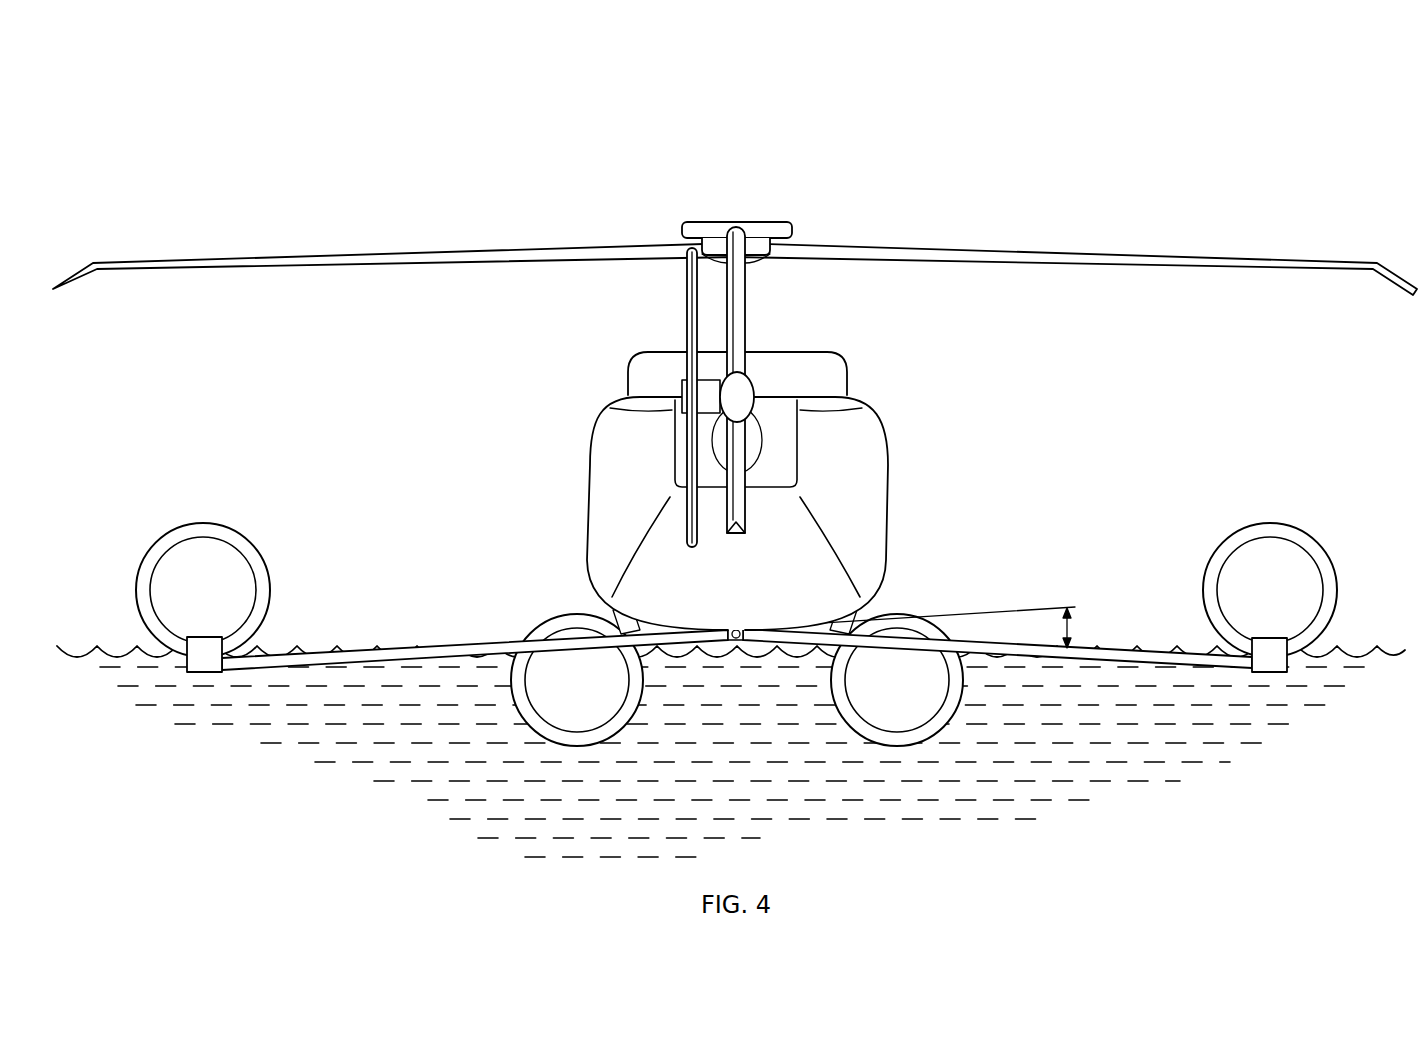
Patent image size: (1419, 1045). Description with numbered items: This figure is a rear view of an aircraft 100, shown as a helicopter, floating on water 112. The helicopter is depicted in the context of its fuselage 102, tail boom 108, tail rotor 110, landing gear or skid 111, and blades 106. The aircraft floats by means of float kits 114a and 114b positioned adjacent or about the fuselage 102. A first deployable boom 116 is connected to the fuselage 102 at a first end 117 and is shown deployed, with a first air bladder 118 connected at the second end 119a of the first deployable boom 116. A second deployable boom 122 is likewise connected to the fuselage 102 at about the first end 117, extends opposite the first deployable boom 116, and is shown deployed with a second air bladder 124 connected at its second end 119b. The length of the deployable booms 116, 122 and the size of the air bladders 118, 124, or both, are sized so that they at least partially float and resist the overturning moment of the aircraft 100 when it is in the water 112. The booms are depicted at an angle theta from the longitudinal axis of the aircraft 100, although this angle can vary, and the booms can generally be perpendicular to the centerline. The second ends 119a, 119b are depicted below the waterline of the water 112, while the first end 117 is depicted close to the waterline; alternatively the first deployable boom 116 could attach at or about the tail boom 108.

The aircraft 100 is at (1138, 113).
The fuselage 102 is at (752, 491).
The blades 106 is at (938, 247).
The tail boom 108 is at (797, 465).
The tail rotor 110 is at (686, 312).
The landing gear or skid 111 is at (618, 628).
The water 112 is at (78, 648).
The float kit 114a is at (607, 626).
The float kit 114b is at (892, 612).
The first deployable boom 116 is at (1140, 652).
The first end 117 is at (738, 622).
The first air bladder 118 is at (1283, 527).
The second end 119a is at (1270, 675).
The second end 119b is at (205, 673).
The second deployable boom 122 is at (440, 645).
The second air bladder 124 is at (195, 525).